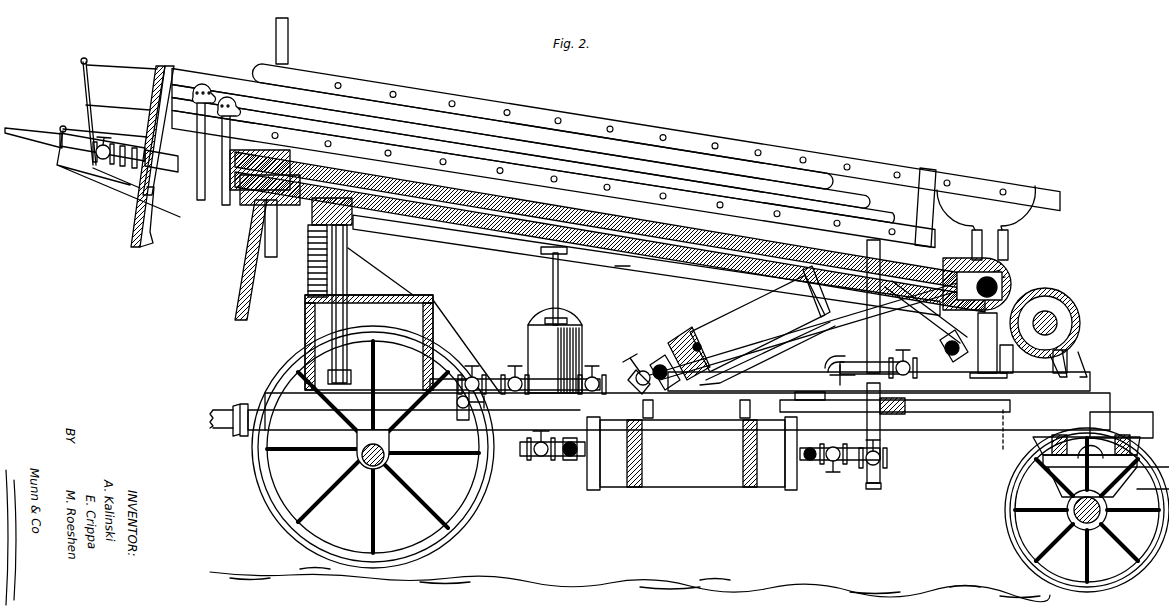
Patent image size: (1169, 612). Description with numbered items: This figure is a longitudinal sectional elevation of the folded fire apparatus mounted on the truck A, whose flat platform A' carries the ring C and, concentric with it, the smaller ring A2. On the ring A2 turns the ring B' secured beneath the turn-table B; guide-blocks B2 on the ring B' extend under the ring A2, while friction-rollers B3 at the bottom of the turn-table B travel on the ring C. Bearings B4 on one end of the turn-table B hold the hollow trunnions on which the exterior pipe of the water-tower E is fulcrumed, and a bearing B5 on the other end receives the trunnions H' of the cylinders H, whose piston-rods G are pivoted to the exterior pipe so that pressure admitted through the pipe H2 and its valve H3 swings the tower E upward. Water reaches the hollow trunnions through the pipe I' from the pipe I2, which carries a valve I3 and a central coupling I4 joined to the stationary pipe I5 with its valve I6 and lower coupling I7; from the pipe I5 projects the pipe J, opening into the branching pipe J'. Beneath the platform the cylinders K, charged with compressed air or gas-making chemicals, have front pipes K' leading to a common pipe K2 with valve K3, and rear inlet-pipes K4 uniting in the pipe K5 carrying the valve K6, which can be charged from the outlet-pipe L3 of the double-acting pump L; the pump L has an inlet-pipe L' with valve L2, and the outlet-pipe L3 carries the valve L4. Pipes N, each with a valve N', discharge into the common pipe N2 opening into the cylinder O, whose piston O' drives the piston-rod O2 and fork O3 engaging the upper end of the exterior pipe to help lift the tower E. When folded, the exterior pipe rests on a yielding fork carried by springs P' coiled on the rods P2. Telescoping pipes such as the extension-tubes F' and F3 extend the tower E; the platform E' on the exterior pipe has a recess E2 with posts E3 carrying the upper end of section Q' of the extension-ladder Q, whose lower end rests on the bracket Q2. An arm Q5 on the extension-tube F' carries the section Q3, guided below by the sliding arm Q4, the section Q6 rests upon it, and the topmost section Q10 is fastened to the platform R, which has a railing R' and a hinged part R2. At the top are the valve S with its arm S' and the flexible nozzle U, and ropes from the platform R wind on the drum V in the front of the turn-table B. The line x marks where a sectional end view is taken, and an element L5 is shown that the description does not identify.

The extension-ladder Q is at (616, 156).
The section of the extension-ladder Q10 is at (580, 132).
The section of the extension-ladder Q' is at (521, 147).
The section of the extension-ladder Q3 is at (677, 165).
The section of the extension-ladder Q6 is at (720, 203).
The arm Q5 is at (197, 133).
The bracket Q2 is at (1008, 238).
The arm Q4 is at (935, 200).
The recess E2 is at (290, 40).
The platform E' is at (595, 231).
The water-tower E is at (646, 265).
The post E3 is at (257, 254).
The extension-tube F' is at (530, 244).
The extension-tube F3 is at (435, 298).
The pipe N is at (529, 340).
The valve N' is at (487, 400).
The common pipe N2 is at (362, 330).
The platform R is at (152, 143).
The railing R' is at (116, 137).
The hinged part R2 is at (133, 240).
The flexible nozzle U is at (38, 139).
The valve S is at (119, 152).
The arm S' is at (103, 136).
The spring P' is at (280, 232).
The rod P2 is at (308, 282).
The fork O3 is at (353, 220).
The piston-rod O2 is at (350, 250).
The cylinder O is at (358, 304).
The piston O' is at (355, 365).
The pipe J is at (679, 409).
The pipe J' is at (229, 403).
The truck A is at (627, 447).
The platform A' is at (1121, 425).
The ring A2 is at (982, 410).
The ring C is at (1058, 445).
The section line x is at (1005, 435).
The double-acting pump L is at (546, 320).
The inlet-pipe L' is at (515, 368).
The valve L2 is at (515, 375).
The outlet-pipe L3 is at (542, 458).
The valve L4 is at (592, 375).
The pipe L5 is at (618, 388).
The cylinder K is at (692, 453).
The pipe K' is at (840, 473).
The common pipe K2 is at (840, 468).
The valve K3 is at (832, 470).
The inlet-pipe K4 is at (571, 462).
The common pipe K5 is at (845, 452).
The valve K6 is at (548, 460).
The cylinder H is at (762, 327).
The trunnion H' is at (684, 328).
The pipe H2 is at (648, 366).
The valve H3 is at (648, 366).
The piston-rod G is at (820, 290).
The turn-table B is at (879, 381).
The ring B' is at (894, 384).
The guide-block B2 is at (860, 405).
The friction-roller B3 is at (650, 420).
The bearing B4 is at (942, 412).
The bearing B5 is at (767, 355).
The pipe I' is at (828, 310).
The pipe I2 is at (952, 365).
The valve I3 is at (903, 358).
The coupling I4 is at (840, 404).
The stationary pipe I5 is at (906, 413).
The valve I6 is at (887, 458).
The coupling I7 is at (880, 487).
The drum V is at (1082, 292).